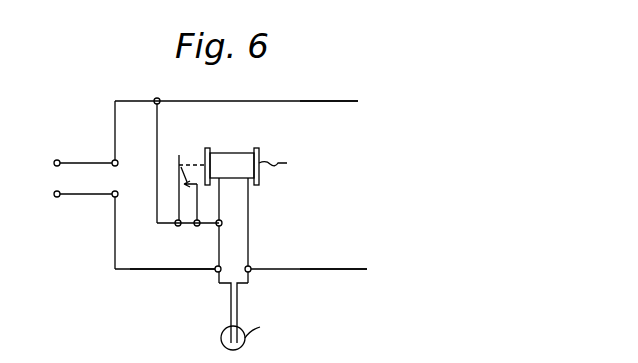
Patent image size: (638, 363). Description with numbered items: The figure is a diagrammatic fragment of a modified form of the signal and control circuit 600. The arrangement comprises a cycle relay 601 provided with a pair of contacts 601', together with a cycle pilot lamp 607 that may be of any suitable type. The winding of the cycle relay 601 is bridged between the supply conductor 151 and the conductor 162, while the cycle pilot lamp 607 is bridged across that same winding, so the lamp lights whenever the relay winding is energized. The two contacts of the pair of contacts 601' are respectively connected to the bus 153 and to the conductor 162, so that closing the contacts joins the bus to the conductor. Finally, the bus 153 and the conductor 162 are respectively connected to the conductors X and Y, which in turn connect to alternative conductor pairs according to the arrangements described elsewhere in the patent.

The control circuit 600 is at (86, 91).
The bus 153 is at (343, 100).
The conductor 162 is at (168, 268).
The supply conductor 151 is at (338, 268).
The pair of contacts 601' is at (197, 166).
The cycle relay 601 is at (274, 194).
The cycle pilot lamp 607 is at (221, 338).